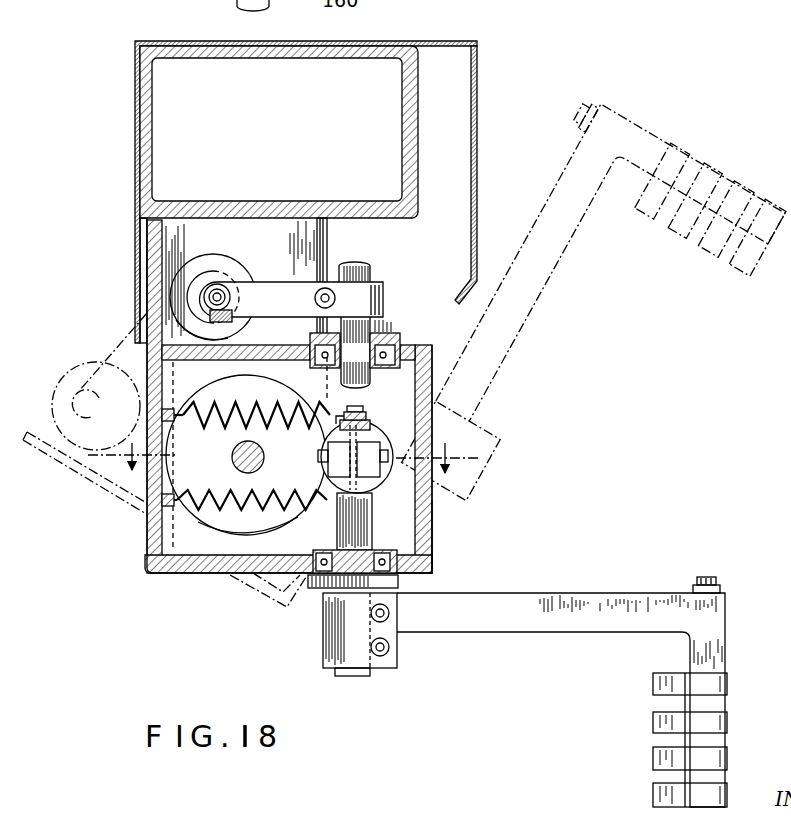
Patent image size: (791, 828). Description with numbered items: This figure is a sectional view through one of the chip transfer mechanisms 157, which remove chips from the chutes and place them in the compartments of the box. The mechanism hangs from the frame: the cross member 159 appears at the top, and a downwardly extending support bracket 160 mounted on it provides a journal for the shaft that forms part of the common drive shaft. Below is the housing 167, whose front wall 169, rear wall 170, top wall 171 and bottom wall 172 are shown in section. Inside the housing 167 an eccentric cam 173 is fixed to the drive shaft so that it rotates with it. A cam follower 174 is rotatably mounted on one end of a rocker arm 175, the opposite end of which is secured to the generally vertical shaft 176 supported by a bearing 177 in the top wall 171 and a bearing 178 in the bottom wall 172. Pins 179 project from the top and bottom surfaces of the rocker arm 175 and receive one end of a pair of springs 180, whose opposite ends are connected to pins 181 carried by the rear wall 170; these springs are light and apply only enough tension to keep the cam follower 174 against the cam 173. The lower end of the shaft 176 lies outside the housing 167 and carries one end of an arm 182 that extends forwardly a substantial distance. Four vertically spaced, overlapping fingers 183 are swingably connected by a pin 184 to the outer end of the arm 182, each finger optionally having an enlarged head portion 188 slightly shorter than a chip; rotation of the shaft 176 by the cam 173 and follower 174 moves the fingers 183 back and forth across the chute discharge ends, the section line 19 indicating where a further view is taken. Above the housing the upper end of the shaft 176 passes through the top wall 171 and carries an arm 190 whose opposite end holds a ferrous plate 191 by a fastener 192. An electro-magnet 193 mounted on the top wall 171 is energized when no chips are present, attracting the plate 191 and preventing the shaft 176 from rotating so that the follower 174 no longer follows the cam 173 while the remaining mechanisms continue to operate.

The section line 19- 19 is at (284, 467).
The chip transfer mechanism 157 is at (183, 575).
The cross member 159 is at (402, 43).
The support bracket 160 is at (328, 241).
The housing 167 is at (434, 560).
The front wall 169 is at (432, 522).
The rear wall 170 is at (152, 537).
The top wall 171 is at (269, 346).
The bottom wall 172 is at (236, 558).
The eccentric cam 173 is at (216, 386).
The cam follower 174 is at (368, 443).
The rocker arm 175 is at (378, 521).
The vertical shaft 176 is at (376, 333).
The bearing 177 is at (402, 347).
The bearing 178 is at (313, 583).
The pin 179 is at (362, 408).
The spring 180 is at (280, 488).
The pin 181 is at (246, 456).
The arm 182 is at (508, 618).
The finger 183 is at (663, 723).
The pin 184 is at (708, 580).
The enlarged head portion 188 is at (667, 797).
The arm 190 is at (311, 282).
The ferrous plate 191 is at (224, 272).
The fastener 192 is at (221, 298).
The electro-magnet 193 is at (203, 258).